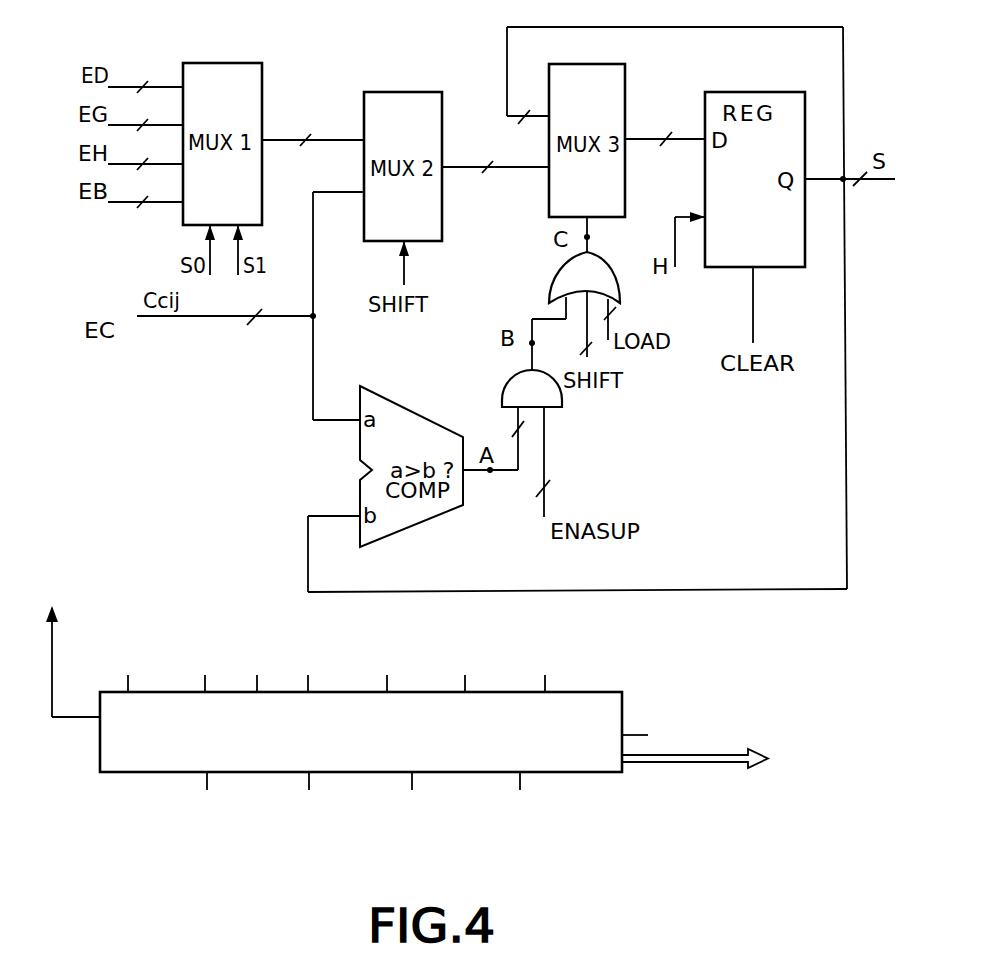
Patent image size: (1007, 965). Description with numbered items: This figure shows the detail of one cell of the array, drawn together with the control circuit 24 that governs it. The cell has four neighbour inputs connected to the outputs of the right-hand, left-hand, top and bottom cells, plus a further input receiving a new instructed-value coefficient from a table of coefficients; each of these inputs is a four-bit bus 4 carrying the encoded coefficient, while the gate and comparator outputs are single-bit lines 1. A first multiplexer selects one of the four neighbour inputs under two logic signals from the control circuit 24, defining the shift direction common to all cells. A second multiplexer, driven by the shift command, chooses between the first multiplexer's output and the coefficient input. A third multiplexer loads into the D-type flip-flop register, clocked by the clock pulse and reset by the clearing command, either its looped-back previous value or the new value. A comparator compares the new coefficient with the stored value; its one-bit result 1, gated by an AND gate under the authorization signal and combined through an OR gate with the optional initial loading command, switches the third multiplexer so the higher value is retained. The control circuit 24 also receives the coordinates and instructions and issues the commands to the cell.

The control circuit 24 is at (135, 775).
The 4-bit bus 4 is at (501, 309).
The 1-bit signal line 1 is at (544, 404).